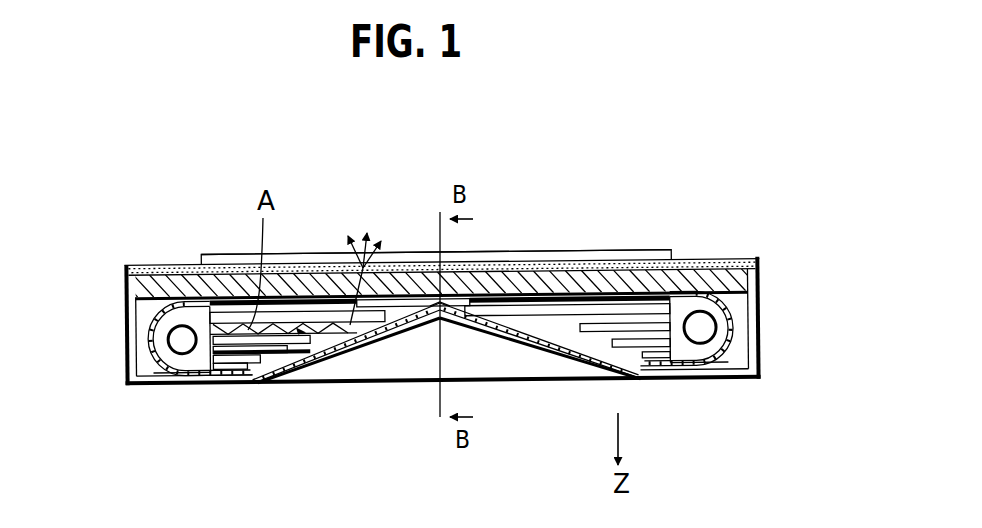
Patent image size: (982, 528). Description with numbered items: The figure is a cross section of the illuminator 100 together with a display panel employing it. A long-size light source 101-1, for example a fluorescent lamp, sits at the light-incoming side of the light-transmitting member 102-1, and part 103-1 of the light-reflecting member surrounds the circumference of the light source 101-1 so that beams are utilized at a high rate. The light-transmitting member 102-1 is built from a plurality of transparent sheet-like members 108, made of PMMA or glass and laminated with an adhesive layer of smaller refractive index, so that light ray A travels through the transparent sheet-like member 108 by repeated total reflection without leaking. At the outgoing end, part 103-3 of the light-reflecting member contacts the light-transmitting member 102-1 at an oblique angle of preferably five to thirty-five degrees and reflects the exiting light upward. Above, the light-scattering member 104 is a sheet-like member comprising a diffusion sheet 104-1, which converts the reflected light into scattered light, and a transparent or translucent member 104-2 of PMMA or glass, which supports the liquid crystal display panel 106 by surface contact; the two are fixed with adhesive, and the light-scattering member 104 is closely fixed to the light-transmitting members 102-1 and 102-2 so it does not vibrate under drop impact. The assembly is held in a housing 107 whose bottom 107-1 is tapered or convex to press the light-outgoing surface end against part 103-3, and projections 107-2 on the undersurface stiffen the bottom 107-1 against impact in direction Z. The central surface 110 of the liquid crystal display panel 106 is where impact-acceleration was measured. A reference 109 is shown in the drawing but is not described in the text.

The illuminator 100 is at (676, 385).
The light source 101-1 is at (165, 350).
The light-transmitting member 102-1 is at (290, 367).
The light-transmitting member 102-2 is at (536, 340).
The part of light-reflecting member 103-1 is at (160, 330).
The part of light-reflecting member 103-3 is at (395, 335).
The light-scattering member 104 is at (853, 225).
The diffusion sheet 104-1 is at (730, 262).
The transparent or translucent member 104-2 is at (735, 282).
The liquid crystal display panel 106 is at (669, 224).
The housing 107 is at (744, 378).
The bottom of the housing 107-1 is at (335, 357).
The projections 107-2 is at (507, 362).
The transparent sheet-like member 108 is at (257, 383).
The stepped layer stack (right) 109 is at (441, 386).
The central surface 110 is at (441, 252).